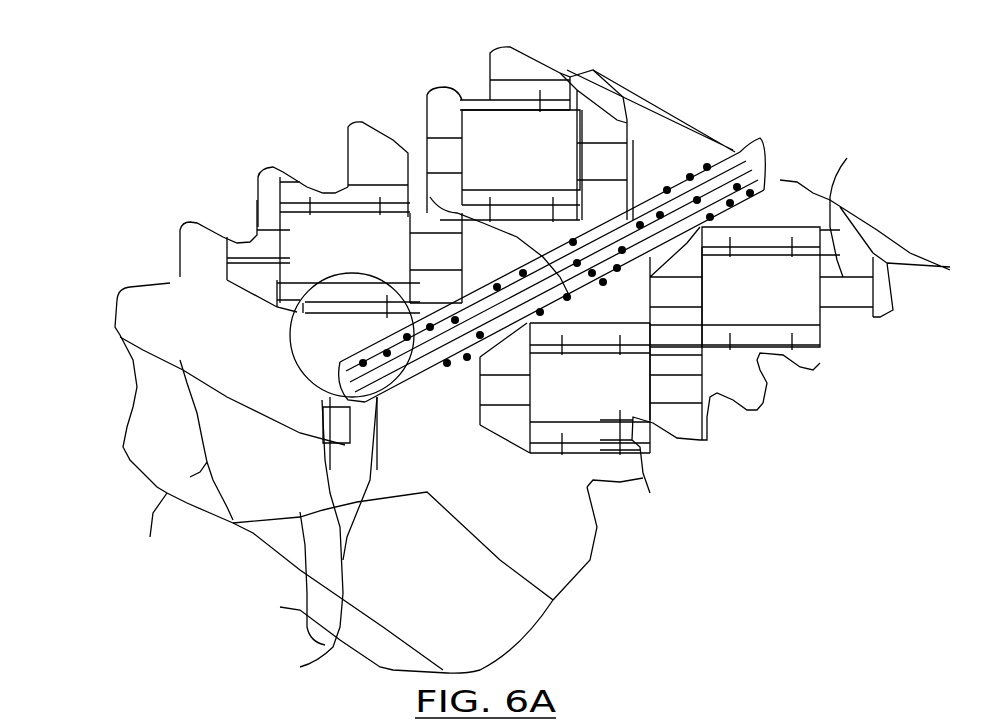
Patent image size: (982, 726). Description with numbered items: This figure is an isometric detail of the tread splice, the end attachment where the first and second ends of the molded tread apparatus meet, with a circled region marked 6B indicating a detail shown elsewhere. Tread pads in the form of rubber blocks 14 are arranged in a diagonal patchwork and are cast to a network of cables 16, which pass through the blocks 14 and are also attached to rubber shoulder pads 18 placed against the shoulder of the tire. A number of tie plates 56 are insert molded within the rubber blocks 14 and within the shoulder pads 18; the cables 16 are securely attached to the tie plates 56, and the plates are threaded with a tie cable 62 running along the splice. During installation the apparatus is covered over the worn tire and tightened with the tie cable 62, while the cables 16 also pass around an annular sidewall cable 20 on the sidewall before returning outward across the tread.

The rubber blocks 14 is at (550, 127).
The rubber shoulder pads 18 is at (657, 143).
The tie plates 56 is at (763, 180).
The cables 16 is at (790, 250).
The detail view region 6B is at (290, 327).
The annular sidewall cable 20 is at (330, 500).
The tie cable 62 is at (430, 197).